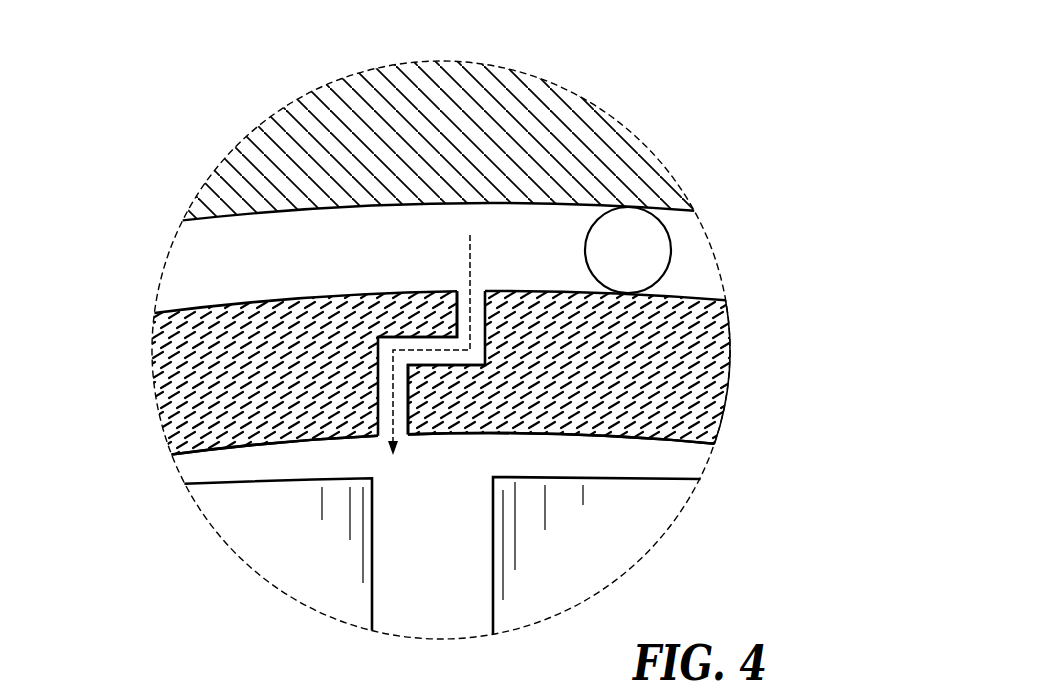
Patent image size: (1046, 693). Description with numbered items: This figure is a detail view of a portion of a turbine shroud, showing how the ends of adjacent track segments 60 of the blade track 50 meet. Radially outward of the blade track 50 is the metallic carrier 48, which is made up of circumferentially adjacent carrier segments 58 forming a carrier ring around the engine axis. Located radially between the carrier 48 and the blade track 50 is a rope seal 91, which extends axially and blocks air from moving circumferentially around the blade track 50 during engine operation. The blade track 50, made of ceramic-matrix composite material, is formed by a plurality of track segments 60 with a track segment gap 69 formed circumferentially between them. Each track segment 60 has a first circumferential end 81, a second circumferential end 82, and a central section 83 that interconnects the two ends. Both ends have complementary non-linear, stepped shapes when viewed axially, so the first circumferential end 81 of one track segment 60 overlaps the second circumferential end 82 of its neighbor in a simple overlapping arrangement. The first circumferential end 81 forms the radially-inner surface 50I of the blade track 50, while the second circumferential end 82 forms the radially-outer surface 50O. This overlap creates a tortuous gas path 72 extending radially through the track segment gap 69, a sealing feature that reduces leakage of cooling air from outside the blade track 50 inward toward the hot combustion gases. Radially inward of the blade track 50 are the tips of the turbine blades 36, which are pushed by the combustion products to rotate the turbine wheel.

The carrier 48 is at (600, 88).
The carrier segment 58 is at (576, 164).
The rope seal 91 is at (630, 250).
The blade track 50 is at (461, 405).
The track segment 60 is at (188, 368).
The radially-outer surface of the blade track 50O is at (457, 292).
The radially-inner surface of the blade track 50I is at (482, 437).
The tortuous gas path 72 is at (474, 258).
The track segment gap 69 is at (383, 440).
The second circumferential end 82 is at (392, 287).
The first circumferential end 81 is at (445, 437).
The central section 83 is at (228, 407).
The blade 36 is at (310, 577).